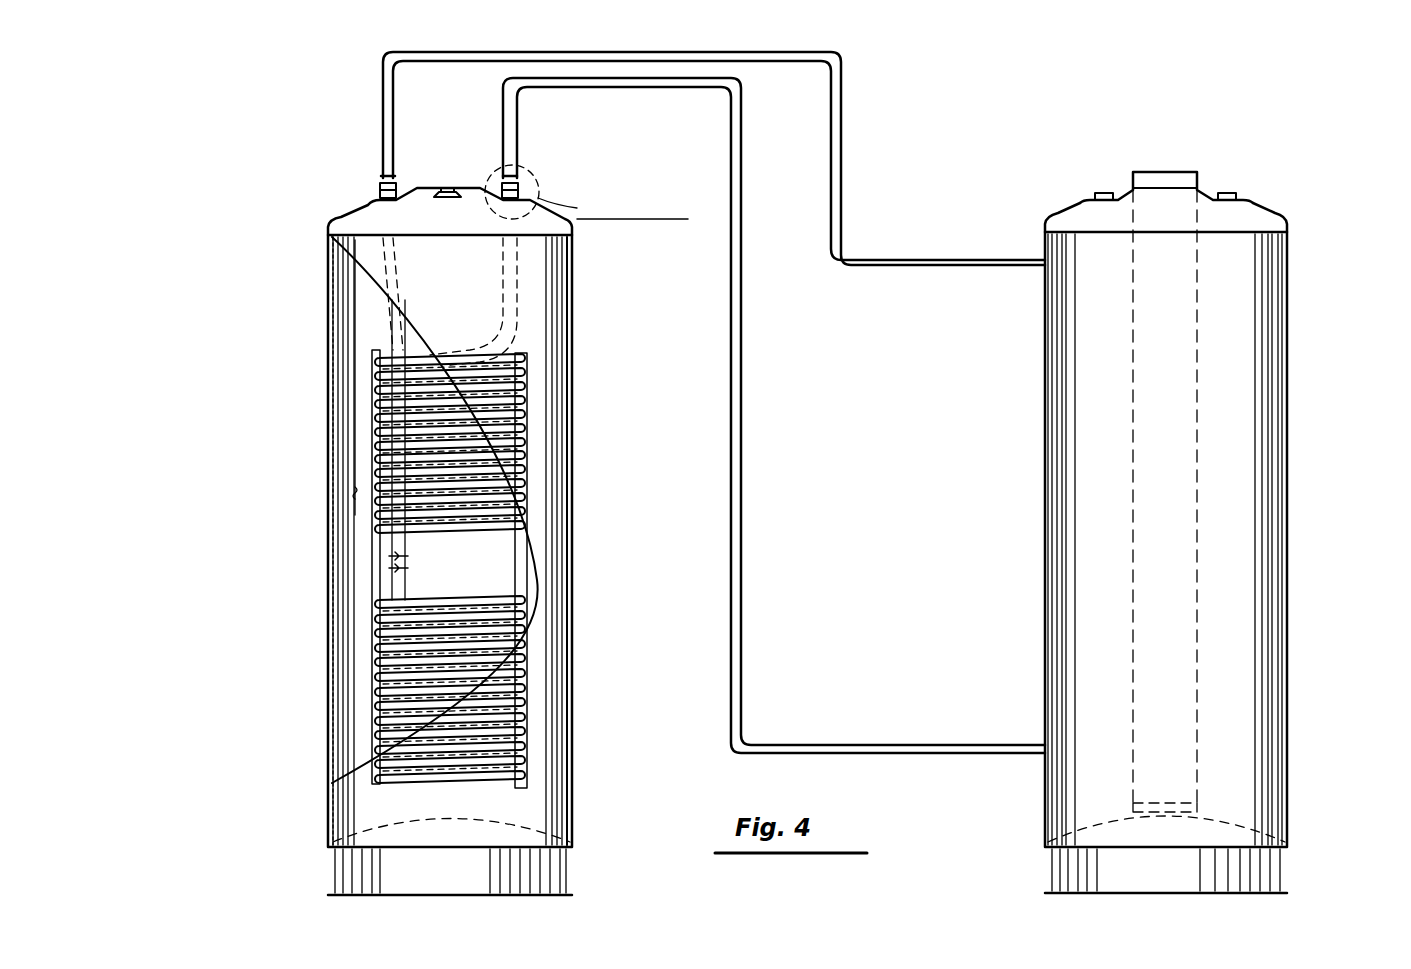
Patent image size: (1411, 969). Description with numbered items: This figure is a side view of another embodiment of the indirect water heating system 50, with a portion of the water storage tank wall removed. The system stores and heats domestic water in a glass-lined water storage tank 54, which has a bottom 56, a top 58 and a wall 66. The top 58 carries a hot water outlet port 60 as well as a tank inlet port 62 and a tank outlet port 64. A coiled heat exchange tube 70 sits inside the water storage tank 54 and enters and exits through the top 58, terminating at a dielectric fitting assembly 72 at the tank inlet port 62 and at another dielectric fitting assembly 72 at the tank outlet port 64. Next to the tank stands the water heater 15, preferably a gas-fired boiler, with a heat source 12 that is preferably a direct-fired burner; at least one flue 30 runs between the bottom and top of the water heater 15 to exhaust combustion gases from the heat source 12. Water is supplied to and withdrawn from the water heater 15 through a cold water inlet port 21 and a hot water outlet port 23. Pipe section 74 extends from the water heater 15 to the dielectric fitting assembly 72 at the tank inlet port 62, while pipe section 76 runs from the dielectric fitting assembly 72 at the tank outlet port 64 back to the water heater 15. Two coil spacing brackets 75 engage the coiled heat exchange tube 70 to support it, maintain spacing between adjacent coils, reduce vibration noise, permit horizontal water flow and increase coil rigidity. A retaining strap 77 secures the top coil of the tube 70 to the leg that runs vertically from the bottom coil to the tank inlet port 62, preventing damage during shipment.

The heat source 12 is at (1044, 864).
The water heater 15 is at (1290, 476).
The cold water inlet port 21 is at (1238, 194).
The hot water outlet port 23 is at (1095, 194).
The flue 30 is at (1130, 566).
The indirect water heating system 50 is at (316, 690).
The water storage tank 54 is at (574, 516).
The bottom 56 is at (357, 830).
The top 58 is at (340, 218).
The hot water outlet port 60 is at (452, 188).
The tank inlet port 62 is at (380, 192).
The tank outlet port 64 is at (520, 192).
The wall 66 is at (355, 490).
The coiled heat exchange tube 70 is at (376, 528).
The dielectric fitting assembly 72 is at (380, 186).
The pipe section 74 is at (844, 146).
The coil spacing bracket 75 is at (400, 555).
The pipe section 76 is at (731, 378).
The retaining strap 77 is at (378, 362).